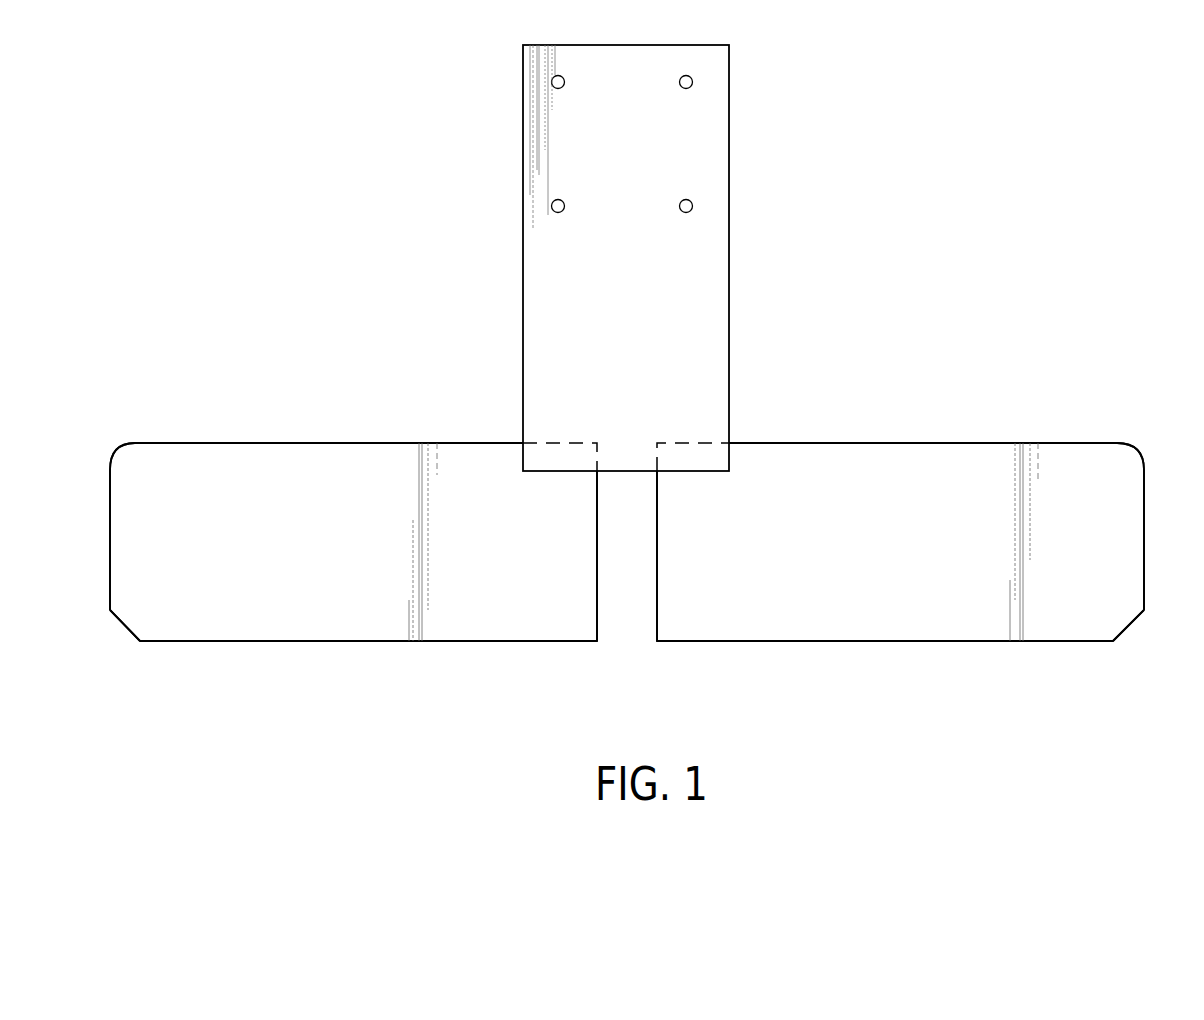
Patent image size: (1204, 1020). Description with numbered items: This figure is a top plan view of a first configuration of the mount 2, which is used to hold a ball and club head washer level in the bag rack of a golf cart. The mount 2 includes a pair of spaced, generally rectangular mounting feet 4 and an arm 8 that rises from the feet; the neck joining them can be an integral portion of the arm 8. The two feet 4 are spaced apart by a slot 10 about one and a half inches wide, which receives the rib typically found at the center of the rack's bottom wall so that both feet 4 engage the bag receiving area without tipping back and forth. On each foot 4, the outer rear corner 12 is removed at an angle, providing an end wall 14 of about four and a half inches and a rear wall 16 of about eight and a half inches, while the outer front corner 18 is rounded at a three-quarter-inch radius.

The mount 2 is at (872, 296).
The mounting foot 4 is at (263, 452).
The arm 8 is at (707, 265).
The slot 10 is at (618, 617).
The outer rear corner 12 is at (130, 632).
The end wall 14 is at (110, 543).
The rear wall 16 is at (353, 641).
The outer front corner 18 is at (125, 445).